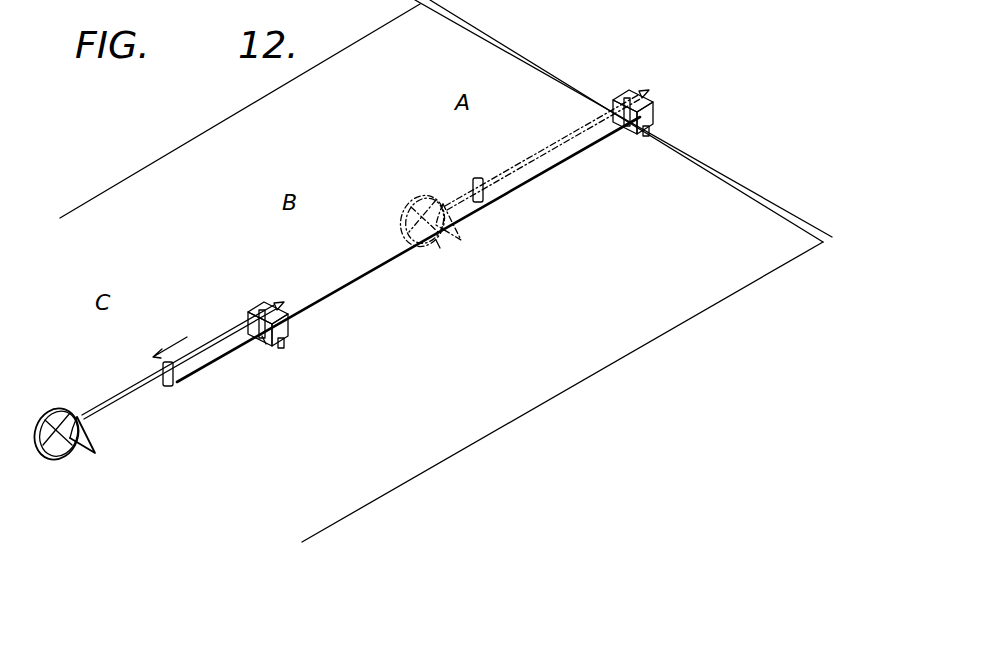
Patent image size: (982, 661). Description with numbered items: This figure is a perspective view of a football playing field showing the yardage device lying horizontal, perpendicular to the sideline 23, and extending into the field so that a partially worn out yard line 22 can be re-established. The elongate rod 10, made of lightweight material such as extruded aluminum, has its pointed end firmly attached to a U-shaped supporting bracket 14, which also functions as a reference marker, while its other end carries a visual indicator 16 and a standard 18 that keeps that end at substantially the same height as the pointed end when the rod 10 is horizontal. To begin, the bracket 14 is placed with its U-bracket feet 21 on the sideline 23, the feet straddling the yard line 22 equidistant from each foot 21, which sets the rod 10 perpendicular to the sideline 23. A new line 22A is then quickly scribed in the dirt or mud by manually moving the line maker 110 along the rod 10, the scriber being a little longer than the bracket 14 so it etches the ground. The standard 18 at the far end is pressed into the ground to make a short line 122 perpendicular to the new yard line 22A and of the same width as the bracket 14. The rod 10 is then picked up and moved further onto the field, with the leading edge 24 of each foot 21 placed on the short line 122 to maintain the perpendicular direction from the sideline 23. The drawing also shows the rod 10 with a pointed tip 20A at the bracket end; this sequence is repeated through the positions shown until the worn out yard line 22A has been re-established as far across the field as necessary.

The elongate rod 10 is at (117, 393).
The U-shaped supporting bracket 14 is at (289, 320).
The visual indicator 16 is at (41, 420).
The standard 18 is at (97, 446).
The pointed tip 20A is at (271, 304).
The U-bracket feet 21 is at (281, 348).
The yard line 22 is at (617, 358).
The scribed line 22A is at (338, 292).
The sideline 23 is at (745, 192).
The leading edge 24 is at (284, 336).
The line maker 110 is at (176, 386).
The short line 122 is at (262, 344).